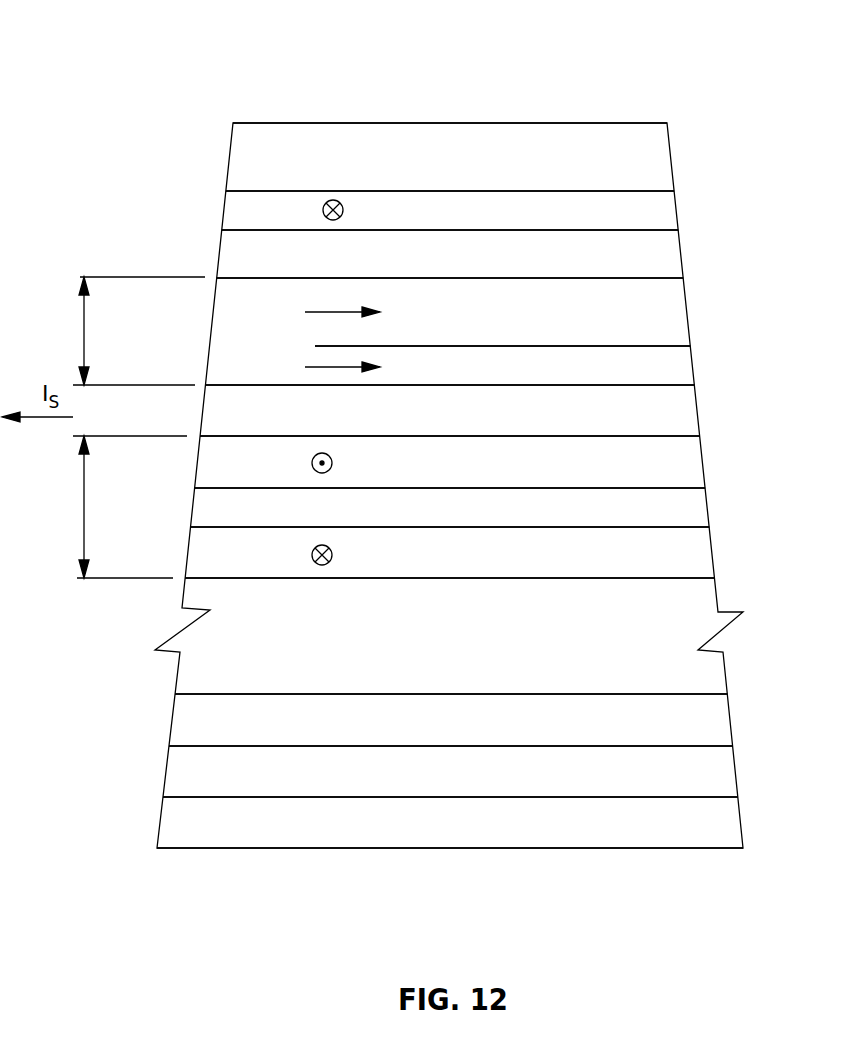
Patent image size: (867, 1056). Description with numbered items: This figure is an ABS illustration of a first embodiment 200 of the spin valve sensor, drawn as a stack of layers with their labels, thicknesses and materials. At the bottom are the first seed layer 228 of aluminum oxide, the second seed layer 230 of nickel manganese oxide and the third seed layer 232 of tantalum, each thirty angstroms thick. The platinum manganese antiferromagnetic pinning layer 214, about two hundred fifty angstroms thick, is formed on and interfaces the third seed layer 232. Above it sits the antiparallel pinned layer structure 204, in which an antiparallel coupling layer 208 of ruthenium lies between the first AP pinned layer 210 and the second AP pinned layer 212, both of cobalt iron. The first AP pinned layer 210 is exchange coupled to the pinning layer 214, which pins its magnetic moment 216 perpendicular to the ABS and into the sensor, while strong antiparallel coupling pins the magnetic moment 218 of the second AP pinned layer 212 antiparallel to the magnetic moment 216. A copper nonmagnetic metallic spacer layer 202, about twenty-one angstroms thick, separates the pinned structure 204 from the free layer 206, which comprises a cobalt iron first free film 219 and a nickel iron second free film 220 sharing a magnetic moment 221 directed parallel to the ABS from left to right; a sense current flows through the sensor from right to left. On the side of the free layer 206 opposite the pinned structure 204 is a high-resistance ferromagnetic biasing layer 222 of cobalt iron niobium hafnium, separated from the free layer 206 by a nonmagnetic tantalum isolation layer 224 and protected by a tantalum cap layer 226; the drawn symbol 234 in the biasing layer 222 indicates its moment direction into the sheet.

The first embodiment of the spin valve sensor 200 is at (611, 73).
The nonmagnetic metallic spacer layer 202 is at (698, 408).
The antiparallel pinned layer structure 204 is at (84, 927).
The free layer 206 is at (84, 927).
The antiparallel coupling layer 208 is at (708, 507).
The first AP pinned layer 210 is at (712, 550).
The second AP pinned layer 212 is at (703, 462).
The antiferromagnetic pinning layer 214 is at (718, 597).
The magnetic moment of the first AP pinned layer 216 is at (311, 555).
The magnetic moment of the second AP pinned layer 218 is at (311, 463).
The first free film 219 is at (693, 363).
The second free film 220 is at (688, 312).
The magnetic moment of the free layer 221 is at (330, 366).
The biasing layer 222 is at (678, 212).
The nonmagnetic isolation layer 224 is at (683, 256).
The cap layer 226 is at (673, 153).
The first seed layer 228 is at (740, 822).
The second seed layer 230 is at (735, 772).
The third seed layer 232 is at (730, 718).
The magnetic moment of bias layer 234 is at (322, 210).